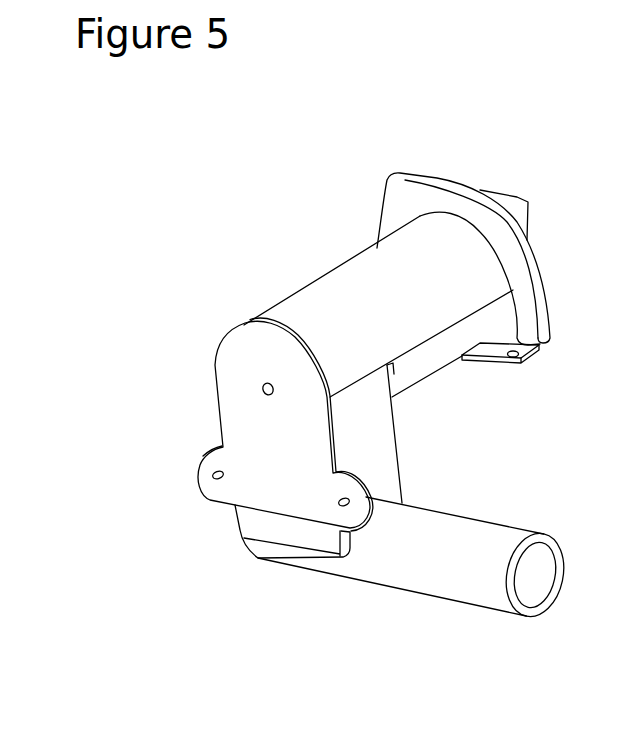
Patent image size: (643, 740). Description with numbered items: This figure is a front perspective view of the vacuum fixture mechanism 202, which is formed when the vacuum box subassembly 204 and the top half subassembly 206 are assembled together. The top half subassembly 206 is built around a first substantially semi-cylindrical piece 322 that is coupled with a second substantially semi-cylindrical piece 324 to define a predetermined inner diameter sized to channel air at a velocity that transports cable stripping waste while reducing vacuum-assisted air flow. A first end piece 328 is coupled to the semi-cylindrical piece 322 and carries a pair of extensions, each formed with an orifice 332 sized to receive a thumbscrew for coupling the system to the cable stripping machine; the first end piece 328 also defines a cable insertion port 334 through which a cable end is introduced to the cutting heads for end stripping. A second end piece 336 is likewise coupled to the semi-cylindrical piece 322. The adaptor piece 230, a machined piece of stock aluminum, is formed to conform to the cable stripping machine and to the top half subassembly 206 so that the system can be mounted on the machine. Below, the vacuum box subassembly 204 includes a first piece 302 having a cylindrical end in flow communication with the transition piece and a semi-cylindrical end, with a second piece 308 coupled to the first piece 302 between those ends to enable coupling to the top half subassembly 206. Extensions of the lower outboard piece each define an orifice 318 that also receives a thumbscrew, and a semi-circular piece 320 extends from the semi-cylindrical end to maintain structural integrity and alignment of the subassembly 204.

The top half subassembly 206 is at (162, 176).
The vacuum fixture mechanism 202 is at (295, 191).
The vacuum box subassembly 204 is at (288, 625).
The first substantially semi-cylindrical piece 322 is at (337, 265).
The second end piece 336 is at (453, 210).
The adaptor piece 230 is at (493, 188).
The second substantially semi-cylindrical piece 324 is at (462, 364).
The second piece 308 is at (381, 447).
The first end piece 328 is at (235, 357).
The cable insertion port 334 is at (265, 381).
The orifice 318 is at (215, 472).
The orifice 332 is at (358, 498).
The semi-circular piece 320 is at (233, 511).
The first piece 302 is at (425, 596).